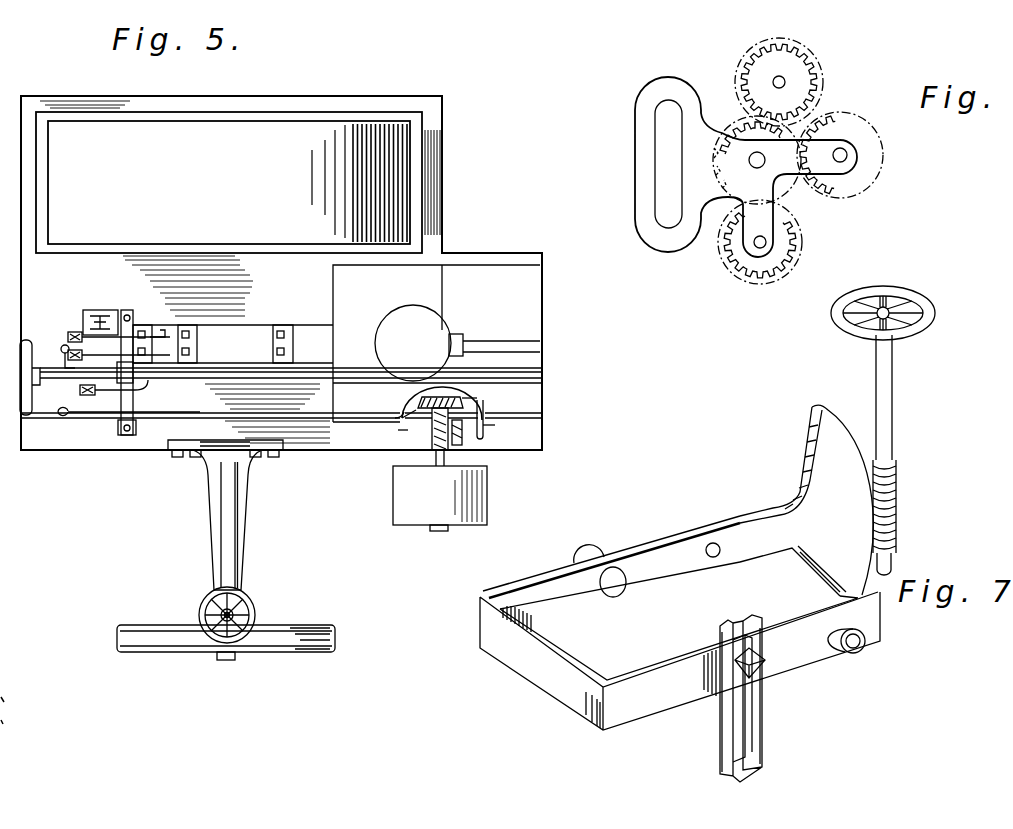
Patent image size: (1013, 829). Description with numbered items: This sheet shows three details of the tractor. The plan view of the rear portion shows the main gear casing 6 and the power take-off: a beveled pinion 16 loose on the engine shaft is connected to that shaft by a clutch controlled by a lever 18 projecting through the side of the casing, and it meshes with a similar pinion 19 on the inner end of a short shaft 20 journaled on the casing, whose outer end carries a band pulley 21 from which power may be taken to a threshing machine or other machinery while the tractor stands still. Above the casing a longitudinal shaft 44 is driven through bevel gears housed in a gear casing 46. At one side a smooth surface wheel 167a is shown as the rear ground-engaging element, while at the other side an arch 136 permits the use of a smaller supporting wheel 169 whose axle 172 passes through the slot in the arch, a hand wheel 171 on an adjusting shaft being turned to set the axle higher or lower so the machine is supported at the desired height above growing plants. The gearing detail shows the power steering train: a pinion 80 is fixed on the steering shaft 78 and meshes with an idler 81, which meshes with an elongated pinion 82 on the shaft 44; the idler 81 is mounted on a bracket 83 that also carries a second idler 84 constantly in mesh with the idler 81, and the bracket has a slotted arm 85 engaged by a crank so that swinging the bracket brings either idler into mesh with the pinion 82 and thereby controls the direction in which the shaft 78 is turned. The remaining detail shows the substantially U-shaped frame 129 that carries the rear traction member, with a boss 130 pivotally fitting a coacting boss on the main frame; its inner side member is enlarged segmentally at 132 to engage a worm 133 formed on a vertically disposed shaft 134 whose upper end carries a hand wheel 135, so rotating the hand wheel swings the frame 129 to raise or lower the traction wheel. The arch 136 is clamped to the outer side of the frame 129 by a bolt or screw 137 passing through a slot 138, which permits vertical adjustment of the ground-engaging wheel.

In FIG. 5, the smooth surface wheel 167a is at (240, 272).
In FIG. 5, the gear casing 46 is at (430, 338).
In FIG. 5, the shaft 44 is at (497, 343).
In FIG. 6, the shaft 44 is at (781, 77).
In FIG. 5, the beveled pinion 16 is at (484, 402).
In FIG. 5, the lever 18 is at (486, 437).
In FIG. 5, the short shaft 20 is at (450, 443).
In FIG. 5, the band pulley 21 is at (470, 502).
In FIG. 5, the pinion 19 is at (416, 436).
In FIG. 5, the gear casing 6 is at (416, 440).
In FIG. 5, the arch 136 is at (220, 533).
In FIG. 7, the arch 136 is at (763, 728).
In FIG. 5, the hand wheel 171 is at (256, 607).
In FIG. 5, the supporting wheel 169 is at (290, 655).
In FIG. 5, the axle 172 is at (228, 661).
In FIG. 6, the slotted arm 85 is at (662, 190).
In FIG. 6, the elongated pinion 82 is at (805, 88).
In FIG. 6, the idler 81 is at (742, 128).
In FIG. 6, the bracket 83 is at (828, 150).
In FIG. 6, the second idler 84 is at (880, 160).
In FIG. 6, the pinion 80 is at (786, 250).
In FIG. 6, the shaft 78 is at (760, 249).
In FIG. 7, the hand wheel 135 is at (925, 325).
In FIG. 7, the shaft 134 is at (885, 387).
In FIG. 7, the worm 133 is at (897, 470).
In FIG. 7, the segment 132 is at (830, 447).
In FIG. 7, the U-shaped frame 129 is at (679, 646).
In FIG. 7, the boss 130 is at (600, 556).
In FIG. 7, the slot 138 is at (740, 735).
In FIG. 7, the bolt or screw 137 is at (765, 665).